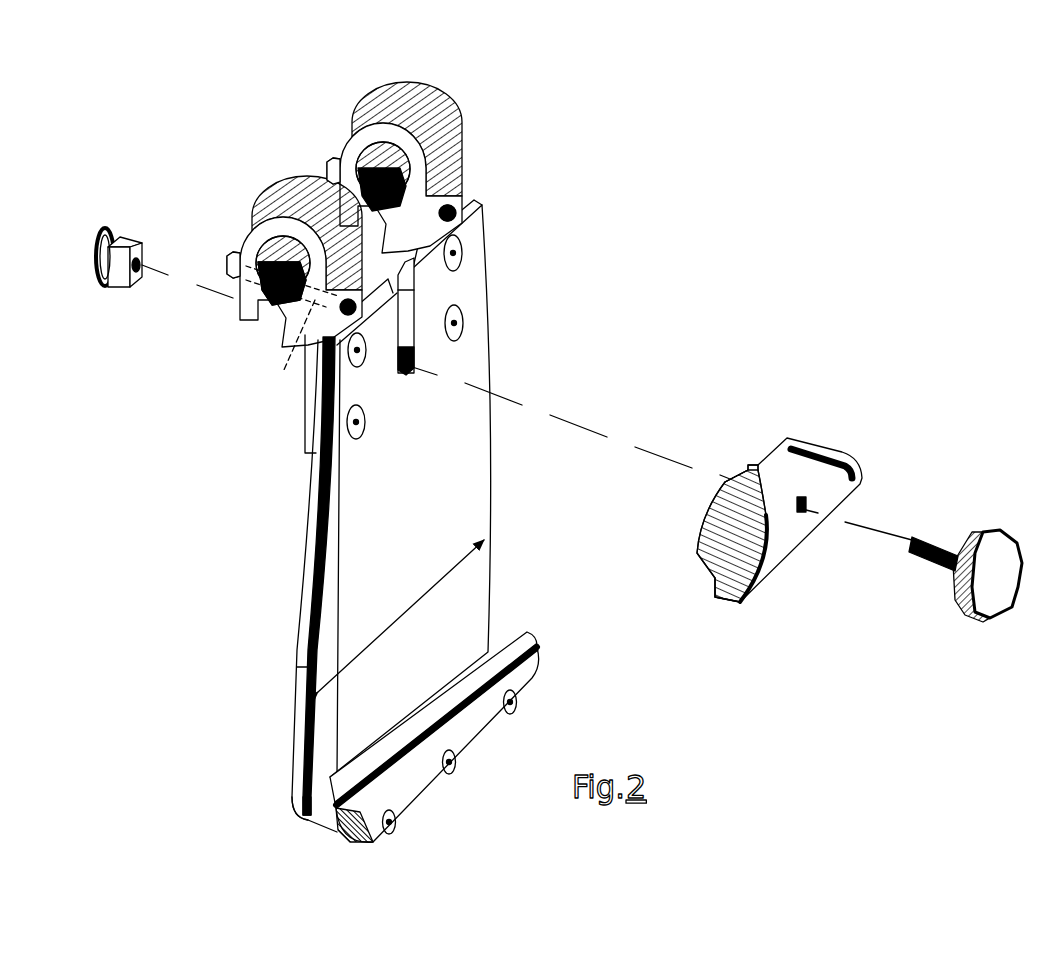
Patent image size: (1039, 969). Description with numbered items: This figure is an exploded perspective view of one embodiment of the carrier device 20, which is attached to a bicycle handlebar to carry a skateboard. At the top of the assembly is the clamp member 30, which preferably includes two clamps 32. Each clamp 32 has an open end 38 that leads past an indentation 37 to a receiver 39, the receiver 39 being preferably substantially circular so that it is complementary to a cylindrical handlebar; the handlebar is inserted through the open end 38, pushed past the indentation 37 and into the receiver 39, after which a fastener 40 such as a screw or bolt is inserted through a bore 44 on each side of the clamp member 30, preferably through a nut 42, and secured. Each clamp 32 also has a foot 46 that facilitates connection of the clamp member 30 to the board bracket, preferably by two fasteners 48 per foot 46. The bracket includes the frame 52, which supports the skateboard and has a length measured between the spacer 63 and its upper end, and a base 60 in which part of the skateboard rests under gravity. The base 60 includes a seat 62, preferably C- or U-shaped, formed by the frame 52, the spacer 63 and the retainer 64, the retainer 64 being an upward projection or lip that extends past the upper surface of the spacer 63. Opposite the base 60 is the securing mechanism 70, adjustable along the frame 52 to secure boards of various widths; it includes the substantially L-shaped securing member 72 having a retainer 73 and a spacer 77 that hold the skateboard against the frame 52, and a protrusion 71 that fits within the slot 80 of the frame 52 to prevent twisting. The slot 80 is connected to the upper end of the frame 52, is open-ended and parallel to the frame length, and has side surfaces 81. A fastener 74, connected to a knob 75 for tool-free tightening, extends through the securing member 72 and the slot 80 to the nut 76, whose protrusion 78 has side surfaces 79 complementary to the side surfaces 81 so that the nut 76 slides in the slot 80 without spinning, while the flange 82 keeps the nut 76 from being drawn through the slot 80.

The carrier device 20 is at (280, 616).
The clamp member 30 is at (284, 330).
The clamp 32 is at (385, 132).
The indentation 37 is at (270, 287).
The open end 38 is at (288, 306).
The receiver 39 is at (407, 175).
The fastener 40 is at (456, 206).
The nut 42 is at (328, 157).
The bore 44 is at (290, 337).
The foot 46 is at (310, 405).
The fastener 48 is at (348, 430).
The frame 52 is at (409, 488).
The base 60 is at (427, 799).
The seat 62 is at (318, 818).
The spacer 63 is at (326, 830).
The retainer 64 is at (513, 645).
The securing mechanism 70 is at (834, 436).
The protrusion 71 is at (738, 475).
The securing member 72 is at (797, 437).
The retainer 73 is at (730, 600).
The fastener 74 is at (945, 547).
The knob 75 is at (996, 528).
The nut 76 is at (100, 236).
The spacer 77 is at (709, 558).
The protrusion 78 is at (112, 285).
The side surfaces 79 is at (118, 276).
The slot 80 is at (400, 275).
The side surfaces 81 is at (405, 310).
The flange 82 is at (94, 268).